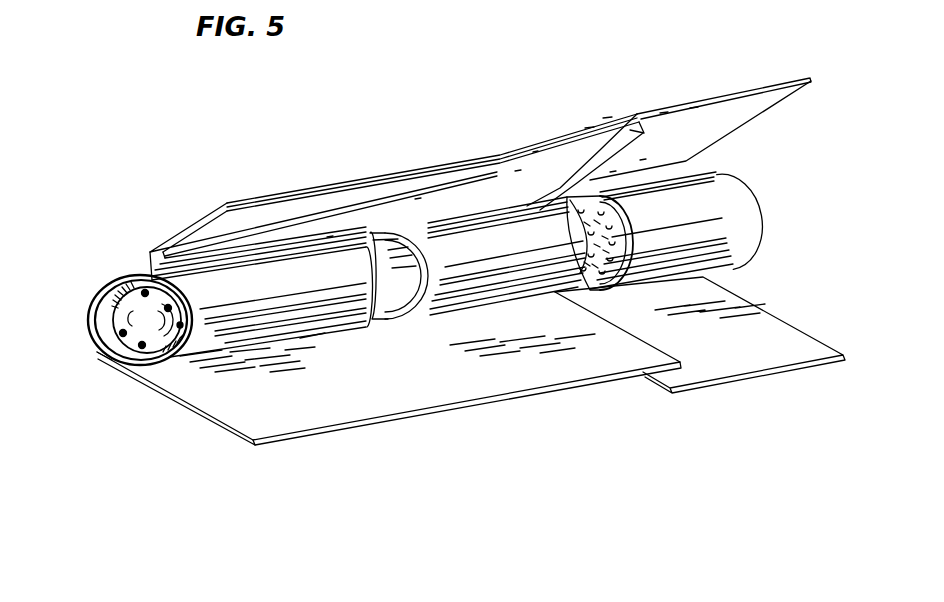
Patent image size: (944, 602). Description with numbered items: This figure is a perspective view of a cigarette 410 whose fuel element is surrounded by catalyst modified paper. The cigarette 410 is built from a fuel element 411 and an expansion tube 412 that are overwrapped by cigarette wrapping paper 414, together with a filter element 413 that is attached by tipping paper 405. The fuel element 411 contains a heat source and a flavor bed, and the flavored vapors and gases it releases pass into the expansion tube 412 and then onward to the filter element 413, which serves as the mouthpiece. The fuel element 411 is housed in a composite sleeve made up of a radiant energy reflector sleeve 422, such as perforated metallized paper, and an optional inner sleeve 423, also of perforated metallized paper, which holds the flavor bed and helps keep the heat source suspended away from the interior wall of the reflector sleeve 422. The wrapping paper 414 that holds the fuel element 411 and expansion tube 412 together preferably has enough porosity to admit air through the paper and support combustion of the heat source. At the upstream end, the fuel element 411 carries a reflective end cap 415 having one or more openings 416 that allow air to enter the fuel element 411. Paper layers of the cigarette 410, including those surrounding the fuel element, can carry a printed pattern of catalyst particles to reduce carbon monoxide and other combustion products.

The tipping paper 405 is at (681, 392).
The cigarette 410 is at (224, 187).
The fuel element 411 is at (311, 247).
The expansion tube 412 is at (501, 214).
The filter element 413 is at (743, 201).
The cigarette wrapping paper 414 is at (451, 407).
The reflective end cap 415 is at (112, 315).
The openings 416 is at (126, 312).
The radiant energy reflector sleeve 422 is at (324, 334).
The inner sleeve 423 is at (364, 318).